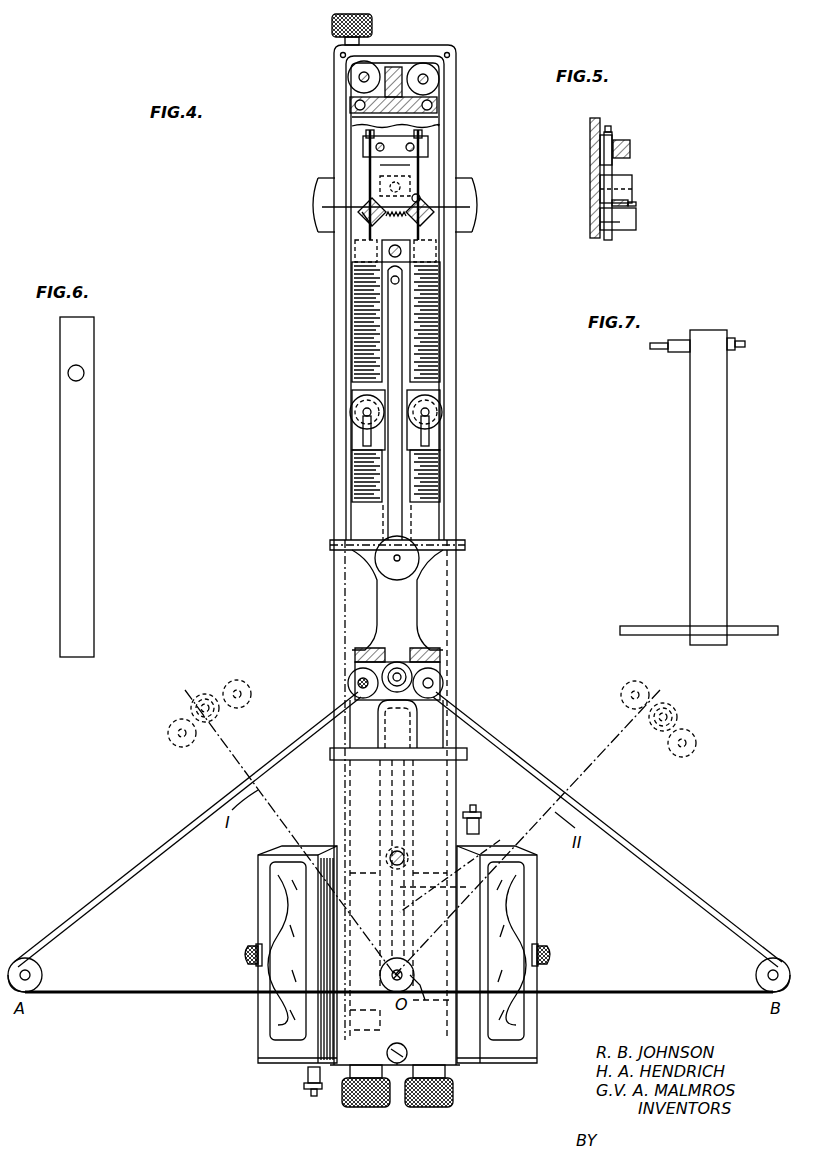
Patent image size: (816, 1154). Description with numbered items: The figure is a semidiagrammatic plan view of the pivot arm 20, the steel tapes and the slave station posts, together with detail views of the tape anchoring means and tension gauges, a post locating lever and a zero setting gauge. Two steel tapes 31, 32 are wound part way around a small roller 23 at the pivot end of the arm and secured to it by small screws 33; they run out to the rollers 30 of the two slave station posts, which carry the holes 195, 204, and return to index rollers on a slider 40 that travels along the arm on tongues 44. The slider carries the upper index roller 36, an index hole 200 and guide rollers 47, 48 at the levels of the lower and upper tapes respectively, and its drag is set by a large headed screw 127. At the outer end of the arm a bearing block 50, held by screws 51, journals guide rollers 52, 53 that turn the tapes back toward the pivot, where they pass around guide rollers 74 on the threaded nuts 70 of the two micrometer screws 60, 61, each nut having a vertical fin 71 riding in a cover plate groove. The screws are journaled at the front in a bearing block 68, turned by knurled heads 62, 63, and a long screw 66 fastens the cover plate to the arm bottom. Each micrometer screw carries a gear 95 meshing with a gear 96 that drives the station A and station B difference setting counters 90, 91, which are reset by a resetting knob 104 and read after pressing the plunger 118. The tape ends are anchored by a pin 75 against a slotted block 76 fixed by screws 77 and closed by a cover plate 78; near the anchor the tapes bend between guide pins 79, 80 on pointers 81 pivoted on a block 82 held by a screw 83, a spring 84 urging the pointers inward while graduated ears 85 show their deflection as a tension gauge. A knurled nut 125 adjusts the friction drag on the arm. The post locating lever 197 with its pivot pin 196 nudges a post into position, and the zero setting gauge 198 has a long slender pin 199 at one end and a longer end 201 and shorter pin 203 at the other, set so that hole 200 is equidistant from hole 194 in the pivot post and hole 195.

In FIG. 4, the knurled nut 125 is at (372, 25).
In FIG. 4, the guide roller 53 is at (348, 75).
In FIG. 4, the guide roller 52 is at (440, 78).
In FIG. 4, the screws 51 is at (437, 104).
In FIG. 4, the bearing block 50 is at (448, 122).
In FIG. 4, the pin 75 is at (370, 137).
In FIG. 5, the pin 75 is at (608, 130).
In FIG. 4, the block 76 is at (428, 147).
In FIG. 5, the block 76 is at (630, 143).
In FIG. 4, the screws 77 is at (385, 150).
In FIG. 5, the screws 77 is at (623, 140).
In FIG. 4, the screw 83 is at (395, 177).
In FIG. 5, the screw 83 is at (635, 195).
In FIG. 4, the block 82 is at (412, 175).
In FIG. 5, the block 82 is at (622, 180).
In FIG. 4, the guide pin 80 is at (425, 195).
In FIG. 5, the guide pin 80 is at (640, 205).
In FIG. 4, the pointer 81 is at (325, 205).
In FIG. 4, the ears 85 is at (362, 222).
In FIG. 4, the spring 84 is at (380, 214).
In FIG. 4, the guide pin 79 is at (428, 232).
In FIG. 5, the guide pin 79 is at (622, 228).
In FIG. 4, the bearing block 68 is at (404, 272).
In FIG. 4, the guide roller 74 is at (357, 407).
In FIG. 4, the vertical fin 71 is at (368, 420).
In FIG. 4, the threaded nut 70 is at (360, 440).
In FIG. 4, the micrometer screw 60 is at (360, 490).
In FIG. 4, the micrometer screw 61 is at (430, 484).
In FIG. 4, the large headed screw 127 is at (415, 548).
In FIG. 4, the pivot arm 20 is at (465, 593).
In FIG. 4, the slider 40 is at (428, 628).
In FIG. 4, the index roller 36 is at (390, 662).
In FIG. 4, the index hole 200 is at (440, 653).
In FIG. 4, the guide roller 48 is at (356, 673).
In FIG. 4, the guide roller 47 is at (445, 684).
In FIG. 4, the tongues 44 is at (468, 755).
In FIG. 4, the plunger 118 is at (470, 818).
In FIG. 4, the gear 96 is at (492, 880).
In FIG. 4, the steel tape 31 is at (150, 858).
In FIG. 4, the steel tape 32 is at (632, 845).
In FIG. 4, the station A difference setting counter 90 is at (252, 873).
In FIG. 4, the station B difference setting counter 91 is at (546, 913).
In FIG. 4, the resetting knob 104 is at (248, 955).
In FIG. 4, the gear 95 is at (396, 1043).
In FIG. 4, the screws 33 is at (396, 957).
In FIG. 4, the hole 194 is at (405, 973).
In FIG. 4, the small roller 23 is at (427, 1000).
In FIG. 4, the hole 195 is at (30, 970).
In FIG. 4, the roller 30 is at (44, 974).
In FIG. 4, the hole 204 is at (773, 969).
In FIG. 4, the knurled head 62 is at (372, 1107).
In FIG. 4, the knurled head 63 is at (433, 1107).
In FIG. 4, the long screw 66 is at (396, 1063).
In FIG. 5, the cover plate 78 is at (597, 162).
In FIG. 6, the pivot pin 196 is at (68, 373).
In FIG. 6, the special lever 197 is at (80, 448).
In FIG. 7, the zero setting gauge 198 is at (712, 445).
In FIG. 7, the long slender pin 199 is at (752, 628).
In FIG. 7, the longer end of pin 201 is at (658, 350).
In FIG. 7, the shorter pin 203 is at (742, 345).